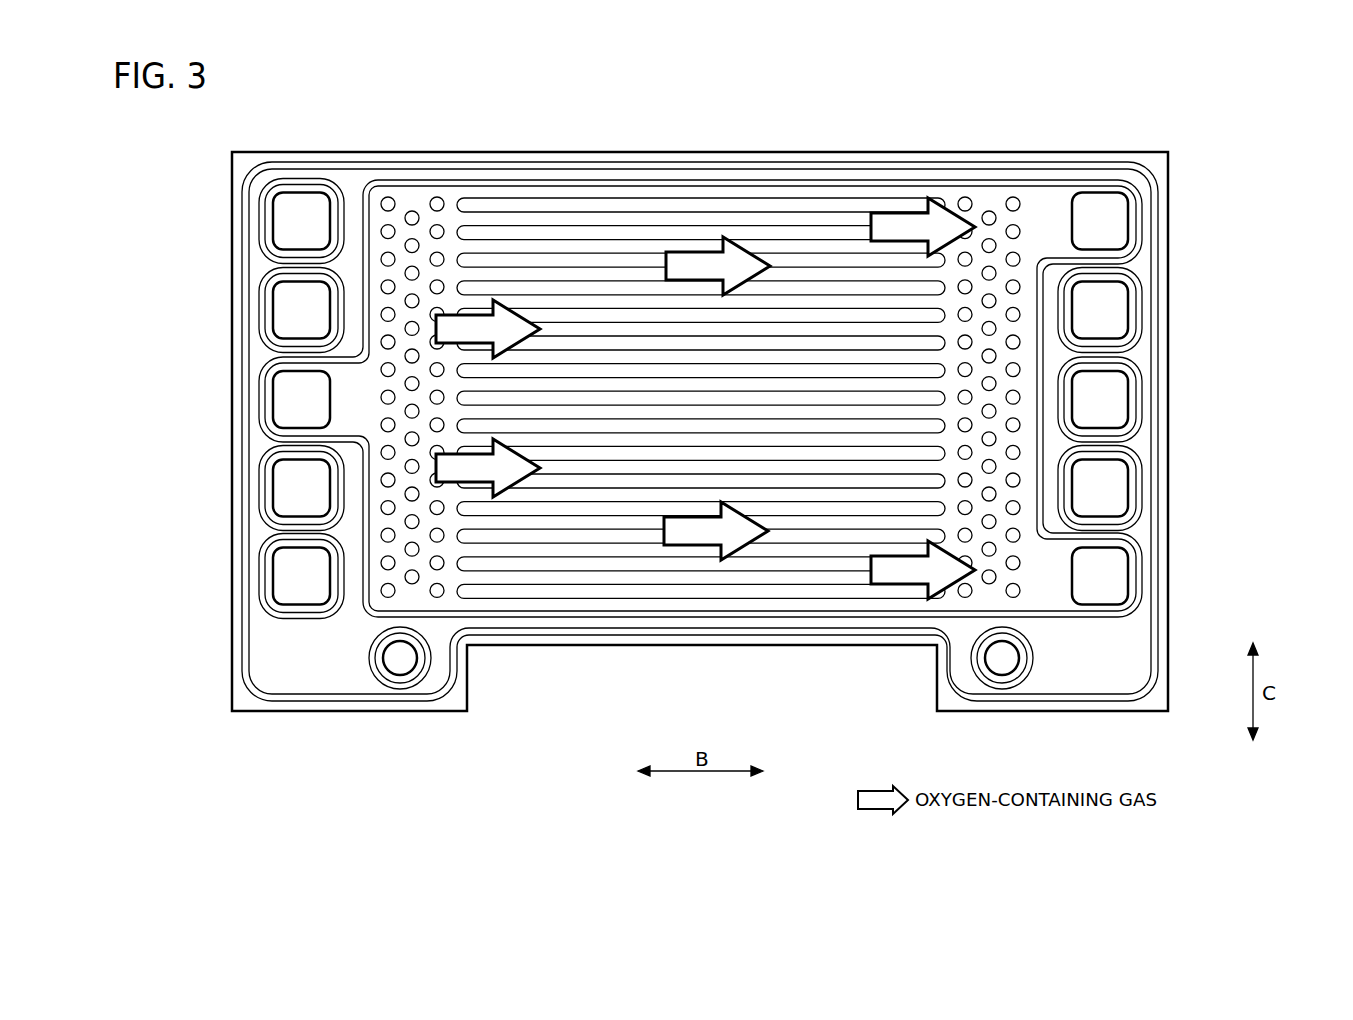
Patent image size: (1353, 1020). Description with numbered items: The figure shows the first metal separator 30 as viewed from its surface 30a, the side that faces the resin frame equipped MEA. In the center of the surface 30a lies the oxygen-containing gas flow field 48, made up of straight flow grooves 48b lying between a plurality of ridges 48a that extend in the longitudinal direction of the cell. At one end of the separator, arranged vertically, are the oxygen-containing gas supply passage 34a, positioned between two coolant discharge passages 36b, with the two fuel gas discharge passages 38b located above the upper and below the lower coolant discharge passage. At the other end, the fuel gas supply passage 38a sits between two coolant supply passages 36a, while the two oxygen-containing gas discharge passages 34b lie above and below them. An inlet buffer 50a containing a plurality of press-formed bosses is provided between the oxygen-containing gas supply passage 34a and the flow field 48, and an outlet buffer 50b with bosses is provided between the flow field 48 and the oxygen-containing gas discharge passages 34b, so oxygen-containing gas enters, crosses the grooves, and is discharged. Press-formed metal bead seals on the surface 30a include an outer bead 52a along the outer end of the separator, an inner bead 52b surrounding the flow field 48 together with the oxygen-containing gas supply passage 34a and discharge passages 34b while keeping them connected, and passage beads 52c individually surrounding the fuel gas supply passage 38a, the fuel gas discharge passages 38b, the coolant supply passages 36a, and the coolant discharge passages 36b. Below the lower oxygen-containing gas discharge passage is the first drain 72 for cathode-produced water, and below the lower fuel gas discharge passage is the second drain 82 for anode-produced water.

The first metal separator 30 is at (282, 112).
The surface 30a is at (954, 203).
The oxygen-containing gas supply passage 34a is at (292, 391).
The oxygen-containing gas discharge passages 34b is at (1117, 223).
The coolant supply passages 36a is at (1112, 314).
The coolant discharge passages 36b is at (292, 314).
The fuel gas supply passage 38a is at (1112, 396).
The fuel gas discharge passages 38b is at (296, 223).
The oxygen-containing gas flow field 48 is at (701, 337).
The ridges 48a is at (593, 227).
The flow grooves 48b is at (648, 243).
The inlet buffer 50a is at (412, 218).
The outlet buffer 50b is at (989, 218).
The outer bead 52a is at (795, 632).
The inner bead 52b is at (540, 612).
The passage beads 52c is at (262, 205).
The first drain 72 is at (1003, 662).
The second drain 82 is at (400, 665).